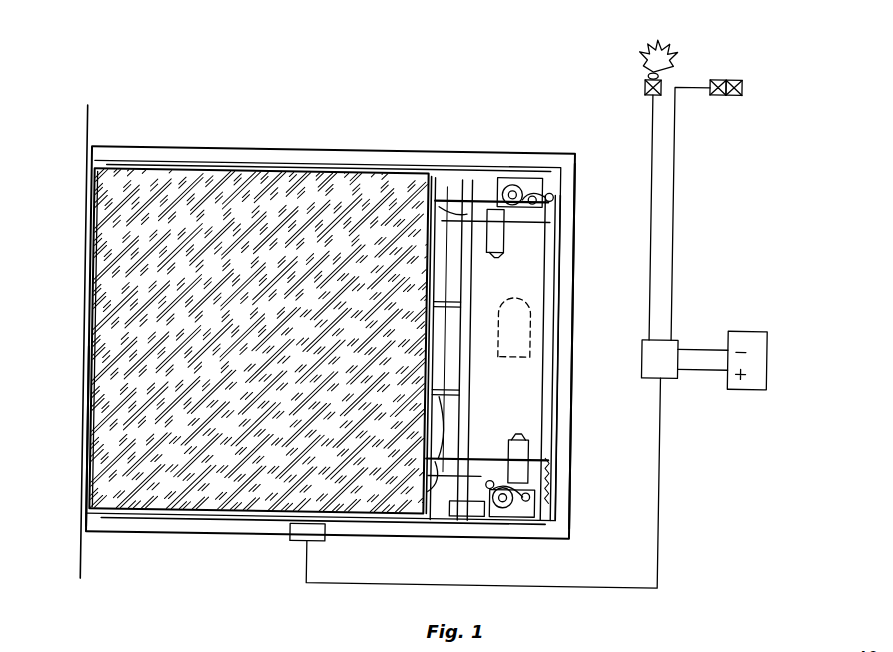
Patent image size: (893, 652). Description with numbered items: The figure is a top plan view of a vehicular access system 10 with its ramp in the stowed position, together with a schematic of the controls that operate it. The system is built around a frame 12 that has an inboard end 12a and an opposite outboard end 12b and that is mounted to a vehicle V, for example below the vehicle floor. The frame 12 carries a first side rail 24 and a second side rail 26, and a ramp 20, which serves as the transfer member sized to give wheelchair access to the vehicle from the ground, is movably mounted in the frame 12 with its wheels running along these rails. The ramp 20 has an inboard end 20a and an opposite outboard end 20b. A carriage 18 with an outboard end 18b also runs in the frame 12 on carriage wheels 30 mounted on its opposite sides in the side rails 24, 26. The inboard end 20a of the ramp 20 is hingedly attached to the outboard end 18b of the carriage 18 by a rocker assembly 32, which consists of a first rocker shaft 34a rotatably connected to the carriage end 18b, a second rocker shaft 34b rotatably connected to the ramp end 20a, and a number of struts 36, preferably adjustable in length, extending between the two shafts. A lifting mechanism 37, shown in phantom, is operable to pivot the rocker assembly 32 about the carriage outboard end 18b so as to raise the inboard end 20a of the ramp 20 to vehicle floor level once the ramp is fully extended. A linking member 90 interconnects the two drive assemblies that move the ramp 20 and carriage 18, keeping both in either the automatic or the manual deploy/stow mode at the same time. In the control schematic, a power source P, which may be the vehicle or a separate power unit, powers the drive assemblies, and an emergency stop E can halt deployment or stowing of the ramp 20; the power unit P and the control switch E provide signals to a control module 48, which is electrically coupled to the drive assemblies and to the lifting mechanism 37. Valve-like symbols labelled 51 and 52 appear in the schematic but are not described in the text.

The vehicular access system 10 is at (406, 302).
The vehicle V is at (86, 118).
The frame 12 is at (348, 319).
The inboard end 12a is at (576, 480).
The outboard end 12b is at (86, 478).
The carriage 18 is at (478, 325).
The outboard end 18b is at (463, 519).
The ramp 20 is at (237, 304).
The inboard end 20a is at (93, 356).
The outboard end 20b is at (428, 195).
The first side rail 24 is at (299, 164).
The second side rail 26 is at (150, 523).
The carriage wheels 30 is at (520, 174).
The rocker assembly 32 is at (440, 250).
The first rocker shaft 34a is at (455, 255).
The second rocker shaft 34b is at (418, 470).
The strut 36 is at (440, 396).
The lifting mechanism 37 is at (518, 330).
The control module 48 is at (293, 533).
The solenoid valve 51 is at (716, 90).
The dual valve unit 52 is at (731, 74).
The linking member 90 is at (560, 266).
The emergency stop E is at (636, 56).
The power source P is at (747, 325).